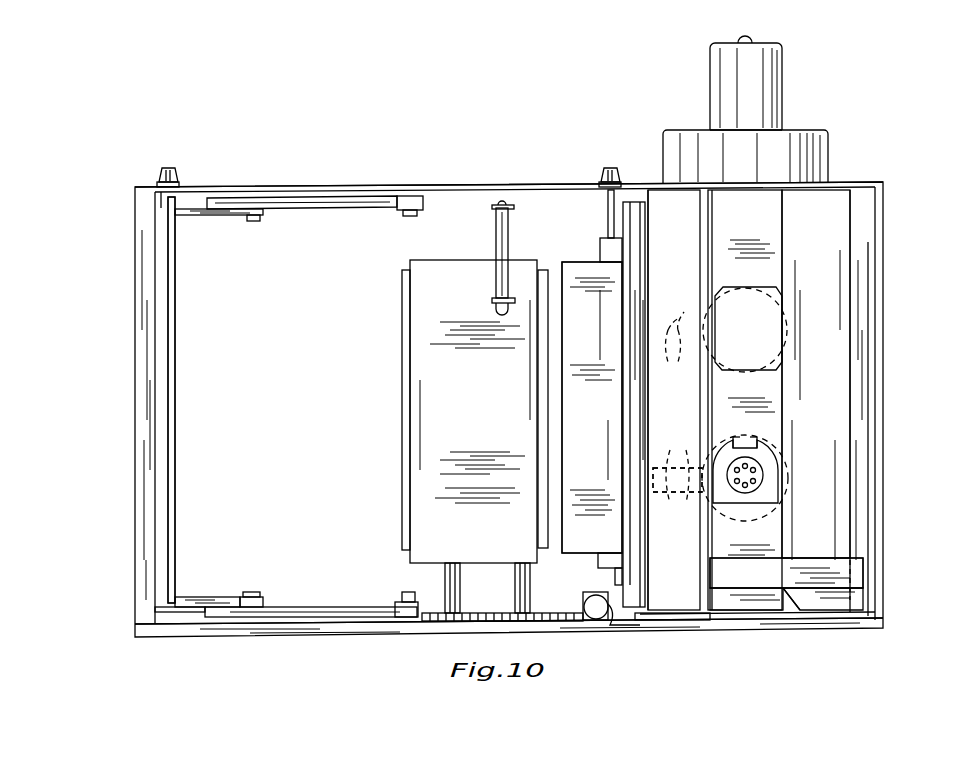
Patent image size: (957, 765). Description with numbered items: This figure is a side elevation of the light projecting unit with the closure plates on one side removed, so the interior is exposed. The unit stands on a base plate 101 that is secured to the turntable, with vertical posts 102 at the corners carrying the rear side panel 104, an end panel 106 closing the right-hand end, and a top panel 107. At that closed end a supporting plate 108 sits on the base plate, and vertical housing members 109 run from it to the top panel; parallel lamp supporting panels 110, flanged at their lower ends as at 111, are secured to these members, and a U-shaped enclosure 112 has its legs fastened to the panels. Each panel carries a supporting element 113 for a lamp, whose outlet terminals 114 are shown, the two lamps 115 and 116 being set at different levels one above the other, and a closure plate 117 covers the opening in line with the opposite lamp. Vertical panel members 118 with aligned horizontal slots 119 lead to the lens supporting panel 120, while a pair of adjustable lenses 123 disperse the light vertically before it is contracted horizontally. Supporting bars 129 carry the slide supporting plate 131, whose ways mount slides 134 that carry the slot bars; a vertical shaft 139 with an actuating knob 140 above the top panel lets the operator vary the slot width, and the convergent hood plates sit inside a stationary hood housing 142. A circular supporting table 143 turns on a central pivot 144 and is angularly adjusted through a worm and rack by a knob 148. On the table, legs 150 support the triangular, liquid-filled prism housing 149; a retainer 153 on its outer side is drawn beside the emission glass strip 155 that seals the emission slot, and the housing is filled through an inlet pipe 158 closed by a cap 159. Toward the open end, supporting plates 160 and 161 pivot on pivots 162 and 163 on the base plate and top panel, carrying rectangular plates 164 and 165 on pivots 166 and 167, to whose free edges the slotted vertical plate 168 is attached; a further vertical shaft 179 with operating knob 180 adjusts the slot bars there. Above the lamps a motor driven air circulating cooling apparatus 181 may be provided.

The base plate 101 is at (680, 628).
The vertical posts 102 is at (142, 511).
The rear side panel 104 is at (322, 432).
The end panel 106 is at (885, 385).
The top panel 107 is at (470, 187).
The supporting plate 108 is at (745, 612).
The vertical housing members 109 is at (708, 566).
The lamp supporting panels 110 is at (785, 532).
The lateral flange 111 is at (775, 604).
The U-shaped enclosure 112 is at (832, 382).
The supporting element 113 is at (770, 482).
The outlet terminals 114 is at (757, 462).
The lamp 115 is at (760, 528).
The lamp 116 is at (797, 326).
The closure plate 117 is at (785, 296).
The vertical panel members 118 is at (688, 526).
The horizontal slots 119 is at (690, 497).
The lens supporting panel 120 is at (649, 410).
The adjustable lenses 123 is at (686, 296).
The supporting bars 129 is at (640, 388).
The slide supporting plate 131 is at (624, 266).
The slides 134 is at (618, 313).
The vertical shaft 139 is at (607, 222).
The actuating knob 140 is at (600, 181).
The hood housing 142 is at (610, 436).
The supporting table 143 is at (572, 612).
The central pivot 144 is at (495, 612).
The knob 148 is at (612, 627).
The prism housing 149 is at (500, 431).
The legs 150 is at (520, 574).
The right plate 153 is at (546, 550).
The emission glass strip 155 is at (405, 494).
The inlet pipe 158 is at (508, 246).
The closure cap 159 is at (509, 206).
The supporting plate 160 is at (305, 606).
The supporting plate 161 is at (322, 208).
The pivot 162 is at (416, 583).
The pivot 163 is at (412, 213).
The rectangular plate 164 is at (205, 596).
The rectangular plate 165 is at (198, 216).
The pivot 166 is at (262, 592).
The pivot 167 is at (255, 221).
The vertical plate 168 is at (177, 413).
The vertical shaft 179 is at (176, 200).
The operating knob 180 is at (180, 182).
The air circulating cooling apparatus 181 is at (773, 88).